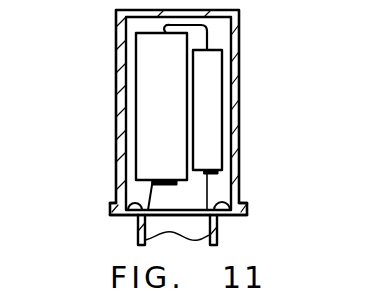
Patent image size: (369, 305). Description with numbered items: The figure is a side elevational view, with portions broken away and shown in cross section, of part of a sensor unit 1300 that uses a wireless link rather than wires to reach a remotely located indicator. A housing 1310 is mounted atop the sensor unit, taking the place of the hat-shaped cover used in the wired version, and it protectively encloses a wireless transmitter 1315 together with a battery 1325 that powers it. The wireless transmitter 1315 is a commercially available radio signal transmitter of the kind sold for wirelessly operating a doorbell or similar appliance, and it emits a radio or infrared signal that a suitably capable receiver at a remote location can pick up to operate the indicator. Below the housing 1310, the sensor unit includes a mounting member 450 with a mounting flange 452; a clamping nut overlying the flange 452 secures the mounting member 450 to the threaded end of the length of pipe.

The sensor unit 1300 is at (205, 127).
The housing 1310 is at (240, 83).
The wireless transmitter 1315 is at (214, 64).
The battery 1325 is at (150, 103).
The mounting flange 452 is at (248, 211).
The mounting member 450 is at (232, 227).